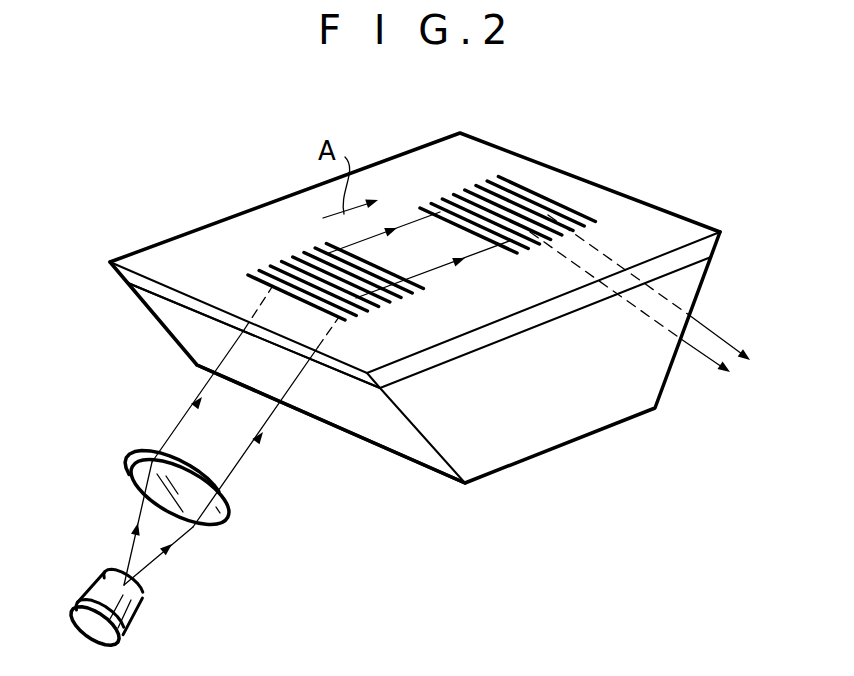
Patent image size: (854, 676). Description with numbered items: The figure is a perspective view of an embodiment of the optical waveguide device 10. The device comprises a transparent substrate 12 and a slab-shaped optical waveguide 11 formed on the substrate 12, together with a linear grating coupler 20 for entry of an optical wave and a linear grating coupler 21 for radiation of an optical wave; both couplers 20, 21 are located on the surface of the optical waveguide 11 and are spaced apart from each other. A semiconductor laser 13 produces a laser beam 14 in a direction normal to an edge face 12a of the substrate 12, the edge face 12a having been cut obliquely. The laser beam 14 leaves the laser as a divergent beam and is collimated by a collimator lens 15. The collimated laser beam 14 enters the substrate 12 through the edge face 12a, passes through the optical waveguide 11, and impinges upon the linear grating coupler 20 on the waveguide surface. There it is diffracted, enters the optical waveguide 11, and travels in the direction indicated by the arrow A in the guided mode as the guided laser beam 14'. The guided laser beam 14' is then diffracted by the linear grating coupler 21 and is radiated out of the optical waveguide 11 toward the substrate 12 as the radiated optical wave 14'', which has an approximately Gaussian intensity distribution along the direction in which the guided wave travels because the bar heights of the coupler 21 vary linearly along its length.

The optical waveguide device 10 is at (259, 174).
The optical waveguide 11 is at (216, 242).
The substrate 12 is at (607, 408).
The edge face 12a is at (365, 420).
The semiconductor laser 13 is at (150, 614).
The laser beam 14 is at (231, 436).
The guided laser beam 14' is at (419, 204).
The radiated optical wave 14'' is at (656, 293).
The collimator lens 15 is at (125, 477).
The linear grating coupler for entry of an optical wave 20 is at (373, 276).
The linear grating coupler for radiation of an optical wave 21 is at (548, 200).